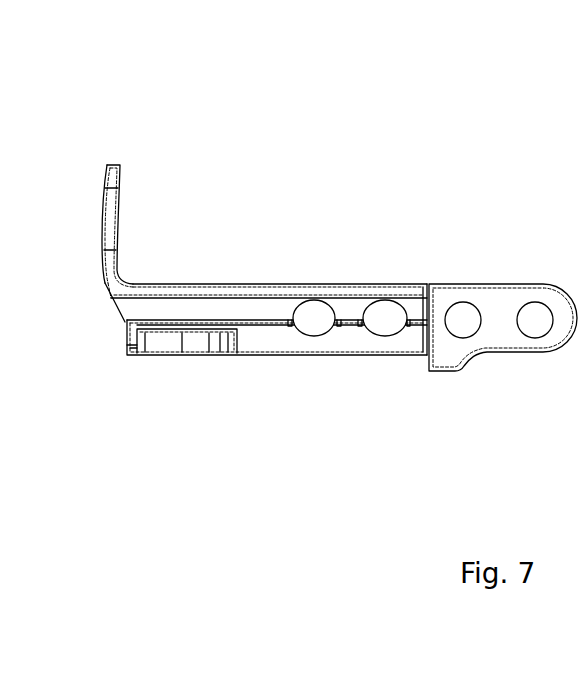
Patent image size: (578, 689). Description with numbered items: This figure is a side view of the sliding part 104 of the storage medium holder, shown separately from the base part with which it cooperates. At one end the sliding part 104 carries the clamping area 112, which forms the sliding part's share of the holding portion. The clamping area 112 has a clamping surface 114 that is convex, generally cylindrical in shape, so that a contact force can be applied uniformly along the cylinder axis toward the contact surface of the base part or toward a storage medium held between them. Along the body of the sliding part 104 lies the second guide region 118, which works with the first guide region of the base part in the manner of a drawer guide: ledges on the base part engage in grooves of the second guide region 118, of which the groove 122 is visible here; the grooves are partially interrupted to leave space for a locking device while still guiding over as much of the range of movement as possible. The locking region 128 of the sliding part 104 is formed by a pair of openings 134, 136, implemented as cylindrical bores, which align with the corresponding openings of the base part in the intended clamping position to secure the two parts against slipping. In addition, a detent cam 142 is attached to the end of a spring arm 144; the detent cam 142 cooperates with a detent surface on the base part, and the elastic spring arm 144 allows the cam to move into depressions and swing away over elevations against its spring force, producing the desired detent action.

The sliding part 104 is at (312, 70).
The clamping area 112 is at (120, 167).
The clamping surface 114 is at (104, 205).
The second guide region 118 is at (248, 325).
The groove 122 is at (122, 309).
The locking region 128 is at (288, 337).
The opening 134 is at (316, 310).
The opening 136 is at (383, 310).
The detent cam 142 is at (232, 347).
The spring arm 144 is at (170, 347).